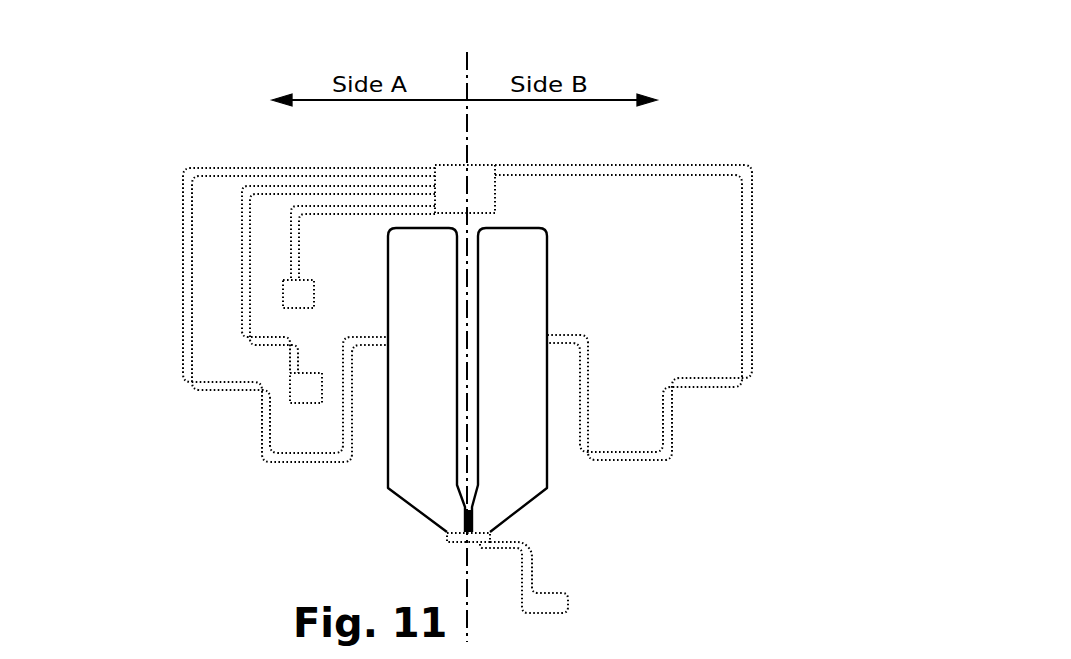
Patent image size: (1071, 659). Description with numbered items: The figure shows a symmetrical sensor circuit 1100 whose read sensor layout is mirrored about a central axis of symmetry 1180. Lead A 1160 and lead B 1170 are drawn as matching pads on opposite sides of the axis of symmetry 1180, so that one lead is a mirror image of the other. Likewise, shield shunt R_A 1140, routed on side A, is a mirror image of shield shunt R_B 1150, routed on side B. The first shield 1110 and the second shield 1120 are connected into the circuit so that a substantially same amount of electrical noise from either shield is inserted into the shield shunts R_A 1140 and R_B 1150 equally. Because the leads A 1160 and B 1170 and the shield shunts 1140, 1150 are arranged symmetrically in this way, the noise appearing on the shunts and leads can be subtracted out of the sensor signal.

The symmetrical sensor circuit 1100 is at (203, 144).
The shield 1 1110 is at (305, 280).
The shield 2 1120 is at (304, 371).
The shield shunt R_A 1140 is at (158, 297).
The shield shunt R_B 1150 is at (798, 287).
The lead A 1160 is at (443, 442).
The lead B 1170 is at (535, 442).
The axis of symmetry 1180 is at (467, 63).